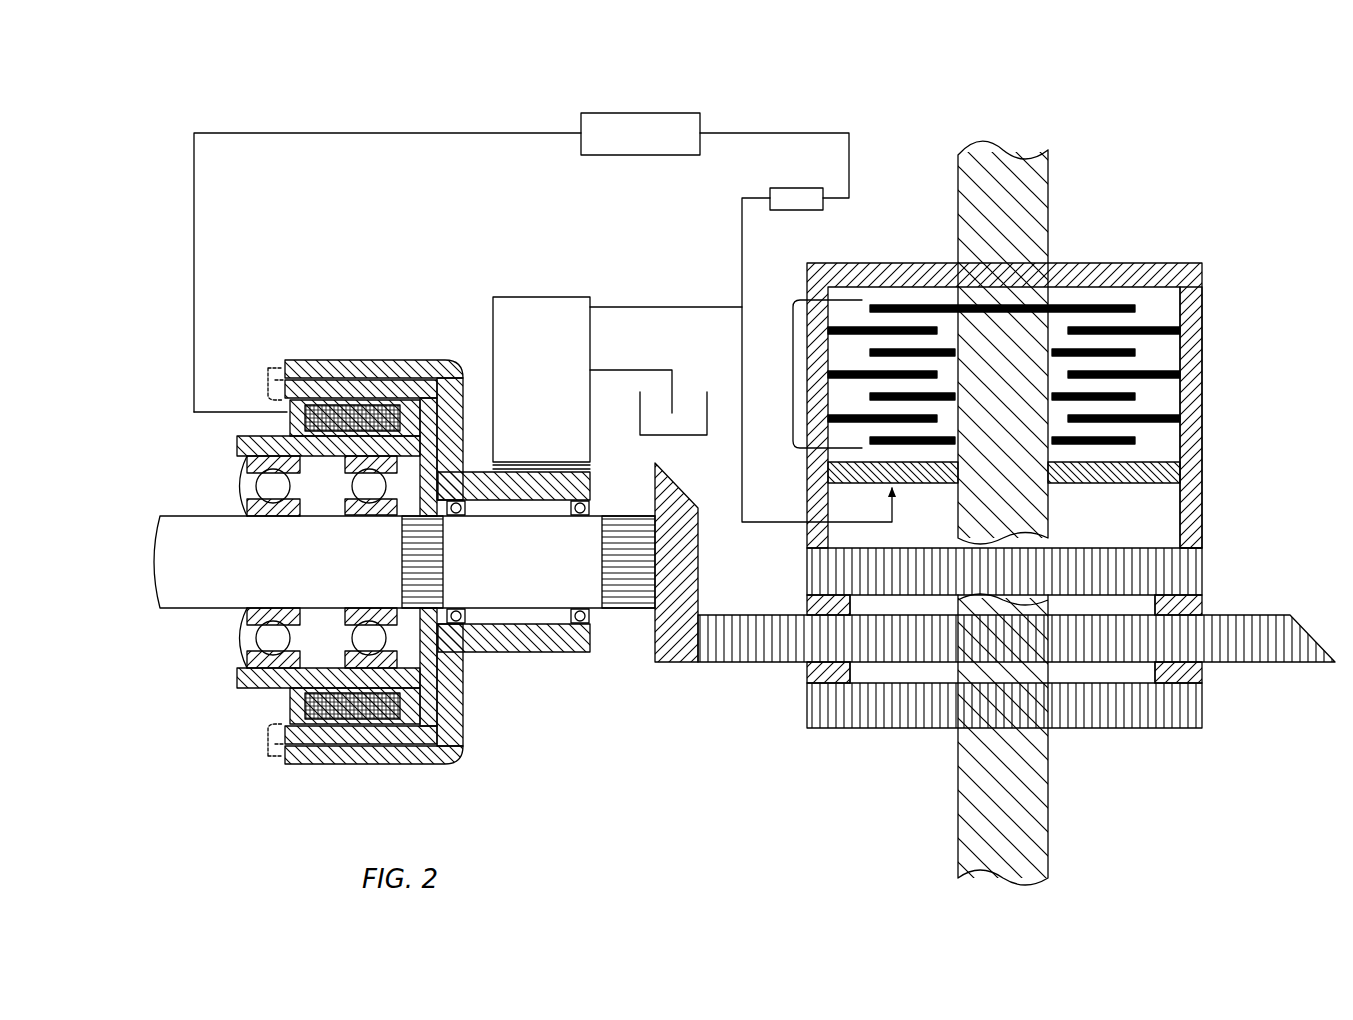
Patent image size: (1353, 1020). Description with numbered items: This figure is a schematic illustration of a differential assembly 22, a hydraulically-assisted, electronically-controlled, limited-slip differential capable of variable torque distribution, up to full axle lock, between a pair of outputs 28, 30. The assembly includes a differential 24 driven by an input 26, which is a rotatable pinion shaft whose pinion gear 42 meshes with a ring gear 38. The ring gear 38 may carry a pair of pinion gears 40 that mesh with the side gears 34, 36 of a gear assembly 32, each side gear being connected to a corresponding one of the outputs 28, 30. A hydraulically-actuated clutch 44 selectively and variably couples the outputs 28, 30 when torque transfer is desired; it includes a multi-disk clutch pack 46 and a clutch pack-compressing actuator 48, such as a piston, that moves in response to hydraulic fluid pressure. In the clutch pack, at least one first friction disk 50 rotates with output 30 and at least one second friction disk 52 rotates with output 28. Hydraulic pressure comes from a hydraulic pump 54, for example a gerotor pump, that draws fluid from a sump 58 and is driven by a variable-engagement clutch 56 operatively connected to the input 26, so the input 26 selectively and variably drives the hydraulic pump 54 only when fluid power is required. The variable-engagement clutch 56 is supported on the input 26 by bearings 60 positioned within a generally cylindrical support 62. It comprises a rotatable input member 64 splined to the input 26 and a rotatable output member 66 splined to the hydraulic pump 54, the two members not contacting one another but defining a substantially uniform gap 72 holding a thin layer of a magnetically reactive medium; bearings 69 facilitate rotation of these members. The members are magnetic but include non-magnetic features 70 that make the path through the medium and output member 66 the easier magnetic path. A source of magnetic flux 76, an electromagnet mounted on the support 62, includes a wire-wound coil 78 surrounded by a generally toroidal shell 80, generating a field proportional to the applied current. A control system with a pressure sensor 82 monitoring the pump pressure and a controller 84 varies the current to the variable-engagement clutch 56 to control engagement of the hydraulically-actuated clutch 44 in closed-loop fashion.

The differential assembly 22 is at (1158, 125).
The differential 24 is at (1173, 258).
The input 26 is at (268, 583).
The output 28 is at (1007, 165).
The output 30 is at (975, 832).
The gear assembly 32 is at (1207, 605).
The side gear 34 is at (1115, 556).
The side gear 36 is at (1095, 720).
The ring gear 38 is at (1250, 652).
The pinion gears 40 is at (812, 688).
The pinion gear 42 is at (676, 562).
The hydraulically-actuated clutch 44 is at (1206, 293).
The multi-disk clutch pack 46 is at (793, 375).
The clutch pack-compressing actuator 48 is at (1160, 471).
The first friction disk 50 is at (1135, 396).
The second friction disk 52 is at (937, 375).
The hydraulic pump 54 is at (510, 297).
The variable-engagement clutch 56 is at (370, 355).
The sump 58 is at (688, 436).
The bearings 60 is at (252, 502).
The support 62 is at (244, 447).
The input member 64 is at (440, 440).
The output member 66 is at (447, 382).
The bearings 69 is at (586, 505).
The non-magnetic feature 70 is at (360, 398).
The gap 72 is at (398, 382).
The source of magnetic flux 76 is at (285, 420).
The wire-wound coil 78 is at (338, 398).
The toroidal shell 80 is at (282, 398).
The pressure sensor 82 is at (776, 188).
The controller 84 is at (590, 113).